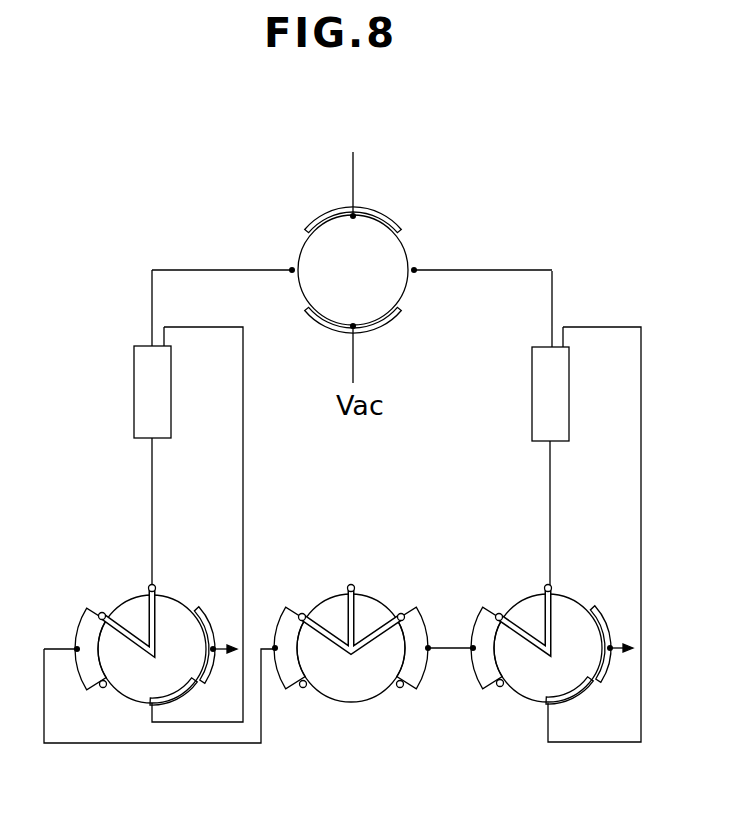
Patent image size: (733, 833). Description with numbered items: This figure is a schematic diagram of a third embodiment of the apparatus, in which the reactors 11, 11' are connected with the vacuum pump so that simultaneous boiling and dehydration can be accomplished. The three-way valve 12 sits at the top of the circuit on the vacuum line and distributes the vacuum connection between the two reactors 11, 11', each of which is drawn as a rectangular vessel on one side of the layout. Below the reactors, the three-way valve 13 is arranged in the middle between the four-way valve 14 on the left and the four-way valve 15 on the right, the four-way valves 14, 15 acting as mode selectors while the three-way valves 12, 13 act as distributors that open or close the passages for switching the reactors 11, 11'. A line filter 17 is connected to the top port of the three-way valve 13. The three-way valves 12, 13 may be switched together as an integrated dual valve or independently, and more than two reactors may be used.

The three-way valve 12 is at (318, 232).
The reactor 11 is at (107, 373).
The reactor 11' is at (505, 394).
The four-way valve 14 is at (133, 598).
The three-way valve 13 is at (351, 634).
The line filter 17 is at (351, 584).
The four-way valve 15 is at (530, 703).